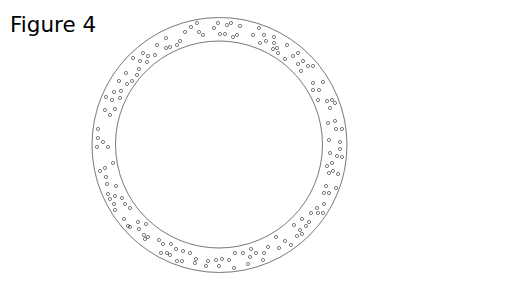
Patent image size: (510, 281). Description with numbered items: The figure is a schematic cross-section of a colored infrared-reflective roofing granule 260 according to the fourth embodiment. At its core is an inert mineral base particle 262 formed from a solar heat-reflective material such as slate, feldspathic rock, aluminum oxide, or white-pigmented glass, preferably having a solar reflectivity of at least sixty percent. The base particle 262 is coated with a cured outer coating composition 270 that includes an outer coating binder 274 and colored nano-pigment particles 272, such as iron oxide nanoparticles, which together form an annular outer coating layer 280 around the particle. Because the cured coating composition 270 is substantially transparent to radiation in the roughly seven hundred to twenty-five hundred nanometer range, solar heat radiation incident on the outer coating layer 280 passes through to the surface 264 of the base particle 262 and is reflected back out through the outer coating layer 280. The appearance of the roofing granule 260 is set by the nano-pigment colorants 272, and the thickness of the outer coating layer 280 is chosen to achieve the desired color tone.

The colored infrared-reflective roofing granule 260 is at (70, 94).
The inert mineral base particle 262 is at (226, 140).
The surface of the solar heat-reflective base particle 264 is at (262, 47).
The cured outer coating composition 270 is at (95, 176).
The colored nano-pigment particles 272 is at (168, 253).
The outer coating binder 274 is at (303, 232).
The outer coating layer 280 is at (315, 78).